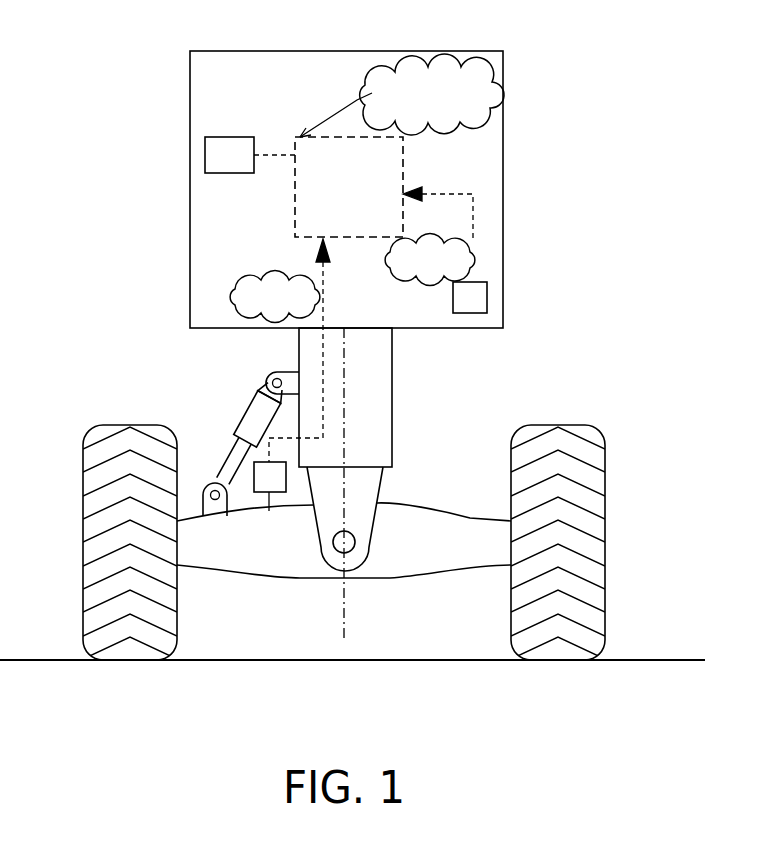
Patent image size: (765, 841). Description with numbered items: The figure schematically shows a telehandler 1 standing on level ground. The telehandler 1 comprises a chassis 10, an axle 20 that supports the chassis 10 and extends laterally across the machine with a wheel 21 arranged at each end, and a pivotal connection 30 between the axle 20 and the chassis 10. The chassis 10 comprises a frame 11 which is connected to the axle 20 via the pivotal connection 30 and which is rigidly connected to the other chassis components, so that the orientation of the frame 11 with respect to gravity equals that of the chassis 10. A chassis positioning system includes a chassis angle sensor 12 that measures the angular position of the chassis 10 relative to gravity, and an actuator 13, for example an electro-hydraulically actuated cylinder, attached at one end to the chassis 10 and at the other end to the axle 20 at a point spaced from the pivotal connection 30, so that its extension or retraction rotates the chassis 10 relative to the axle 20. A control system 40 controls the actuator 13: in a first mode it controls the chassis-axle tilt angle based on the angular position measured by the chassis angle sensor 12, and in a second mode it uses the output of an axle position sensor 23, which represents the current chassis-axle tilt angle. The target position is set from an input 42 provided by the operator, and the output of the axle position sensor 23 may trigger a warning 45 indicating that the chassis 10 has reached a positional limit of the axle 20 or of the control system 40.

The telehandler 1 is at (118, 62).
The chassis 10 is at (503, 145).
The frame 11 is at (383, 410).
The chassis angle sensor 12 is at (358, 255).
The actuator 13 is at (253, 402).
The axle 20 is at (422, 567).
The wheel 21 is at (134, 434).
The axle position sensor 23 is at (292, 375).
The pivotal connection 30 is at (335, 547).
The control system 40 is at (334, 194).
The input 42 is at (250, 155).
The warning 45 is at (432, 94).